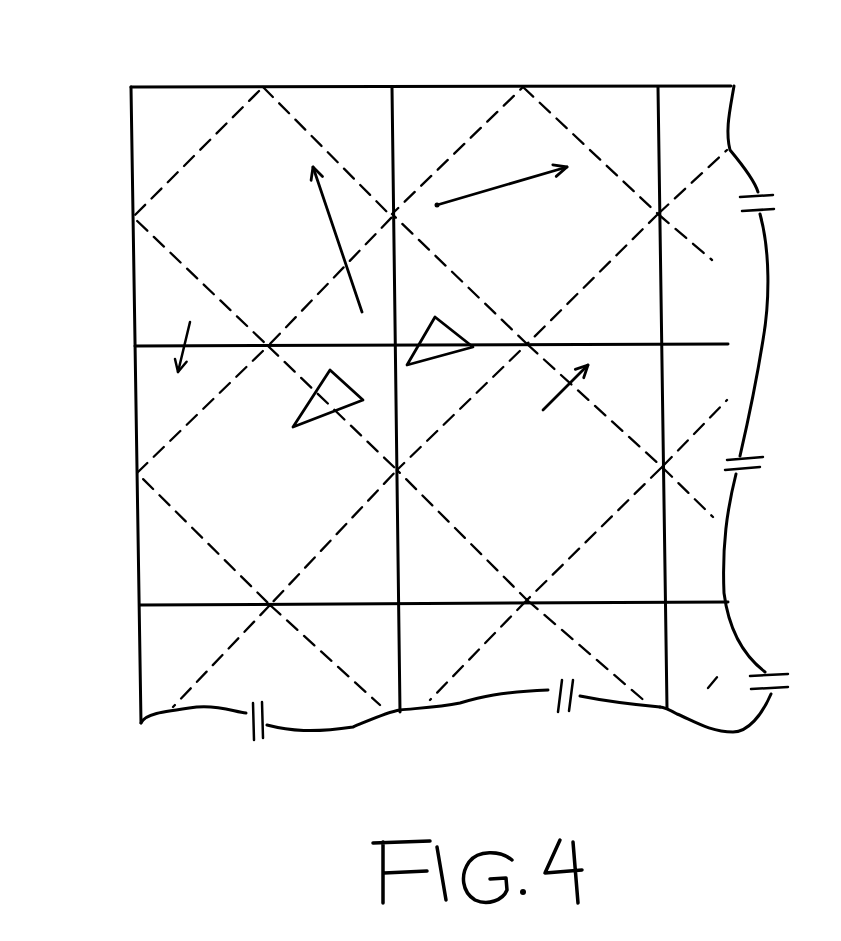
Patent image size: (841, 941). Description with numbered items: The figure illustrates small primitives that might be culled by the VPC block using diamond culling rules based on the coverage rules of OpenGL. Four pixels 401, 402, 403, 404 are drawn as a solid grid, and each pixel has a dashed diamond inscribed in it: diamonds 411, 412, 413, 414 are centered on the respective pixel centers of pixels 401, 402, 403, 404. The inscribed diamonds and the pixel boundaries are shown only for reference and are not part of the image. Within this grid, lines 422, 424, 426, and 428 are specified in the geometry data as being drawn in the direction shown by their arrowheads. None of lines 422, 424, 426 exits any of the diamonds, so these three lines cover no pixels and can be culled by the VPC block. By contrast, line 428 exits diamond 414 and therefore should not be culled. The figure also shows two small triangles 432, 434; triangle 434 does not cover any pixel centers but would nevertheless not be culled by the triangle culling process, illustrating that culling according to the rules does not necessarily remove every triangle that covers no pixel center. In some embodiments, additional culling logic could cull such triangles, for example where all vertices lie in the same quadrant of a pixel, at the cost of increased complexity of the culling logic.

The pixel 401 is at (172, 93).
The pixel 402 is at (433, 96).
The pixel 403 is at (147, 387).
The pixel 404 is at (633, 388).
The diamond 411 is at (273, 181).
The diamond 412 is at (556, 278).
The diamond 413 is at (286, 524).
The diamond 414 is at (551, 533).
The line 422 is at (190, 322).
The line 424 is at (330, 231).
The line 426 is at (492, 184).
The line 428 is at (562, 394).
The triangle primitive 432 is at (457, 303).
The triangle 434 is at (320, 413).